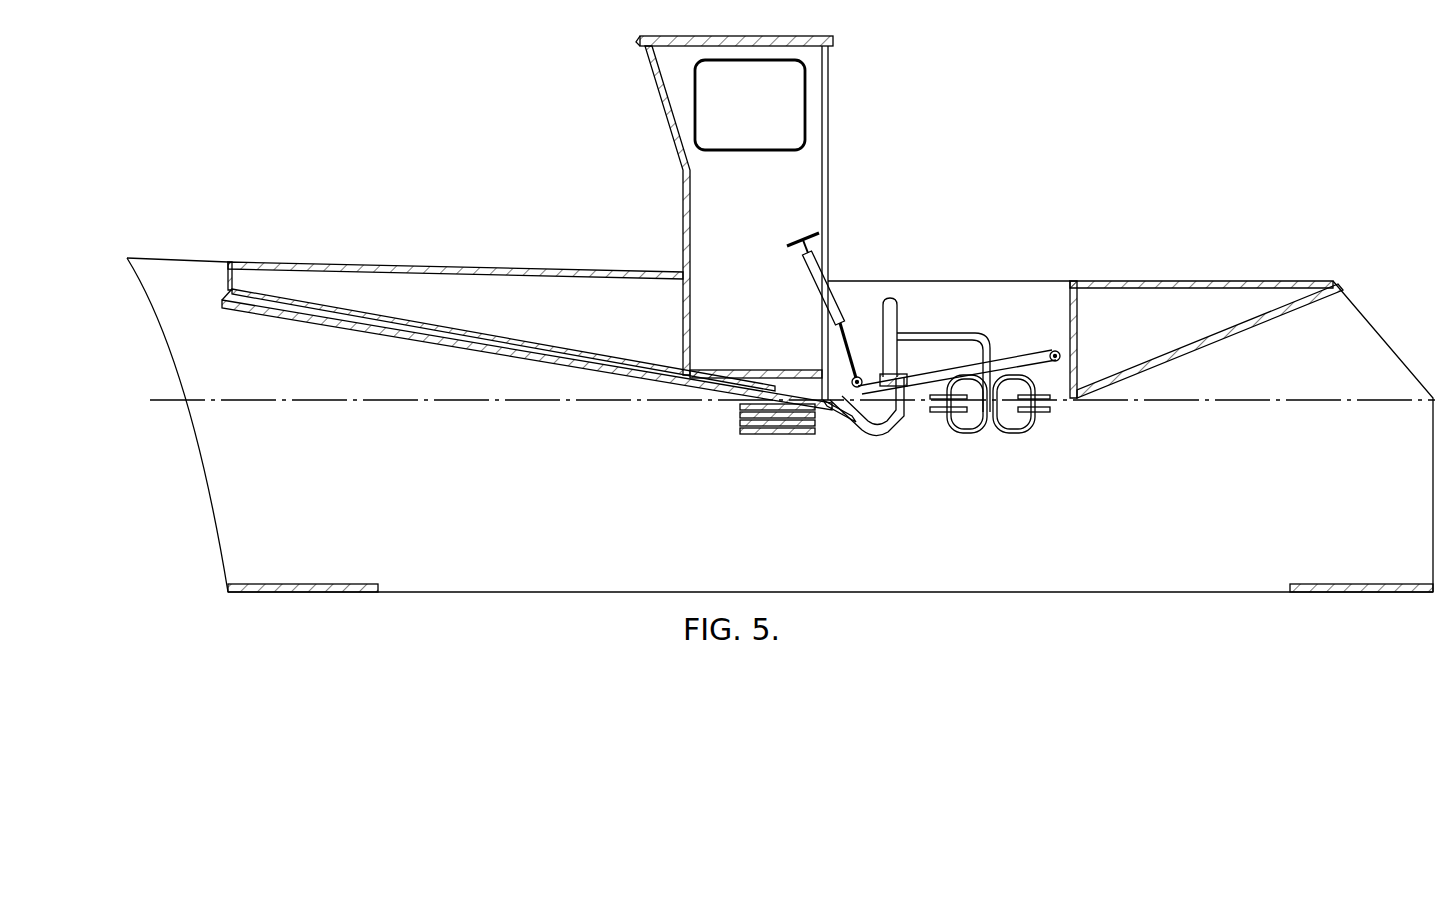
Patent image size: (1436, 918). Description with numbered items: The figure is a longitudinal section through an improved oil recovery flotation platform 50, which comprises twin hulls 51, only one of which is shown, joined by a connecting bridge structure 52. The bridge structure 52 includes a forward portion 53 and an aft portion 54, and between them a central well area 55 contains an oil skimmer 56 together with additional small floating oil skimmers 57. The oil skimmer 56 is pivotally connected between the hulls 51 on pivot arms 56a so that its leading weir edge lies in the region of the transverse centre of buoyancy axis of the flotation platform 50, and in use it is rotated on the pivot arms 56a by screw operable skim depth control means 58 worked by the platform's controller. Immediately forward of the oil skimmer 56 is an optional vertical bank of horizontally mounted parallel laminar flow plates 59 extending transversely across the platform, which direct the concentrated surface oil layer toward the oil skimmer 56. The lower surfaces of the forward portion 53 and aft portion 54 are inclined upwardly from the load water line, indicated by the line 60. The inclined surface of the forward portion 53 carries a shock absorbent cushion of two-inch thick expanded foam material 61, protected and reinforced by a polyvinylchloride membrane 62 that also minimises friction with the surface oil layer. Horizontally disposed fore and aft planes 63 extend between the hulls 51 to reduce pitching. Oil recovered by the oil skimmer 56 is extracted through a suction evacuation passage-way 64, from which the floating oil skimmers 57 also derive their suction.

The flotation platform 50 is at (668, 266).
The hull 51 is at (180, 272).
The bridge structure 52 is at (682, 323).
The forward portion 53 is at (303, 278).
The aft portion 54 is at (1222, 300).
The central well area 55 is at (1038, 289).
The oil skimmer 56 is at (882, 436).
The pivot arms 56a is at (1017, 353).
The floating oil skimmers 57 is at (965, 410).
The skim depth control means 58 is at (828, 275).
The laminar flow plates 59 is at (780, 435).
The load water line 60 is at (177, 403).
The expanded foam material 61 is at (420, 338).
The polyvinylchloride membrane 62 is at (452, 346).
The fore and aft planes 63 is at (307, 584).
The suction evacuation passage-way 64 is at (893, 300).